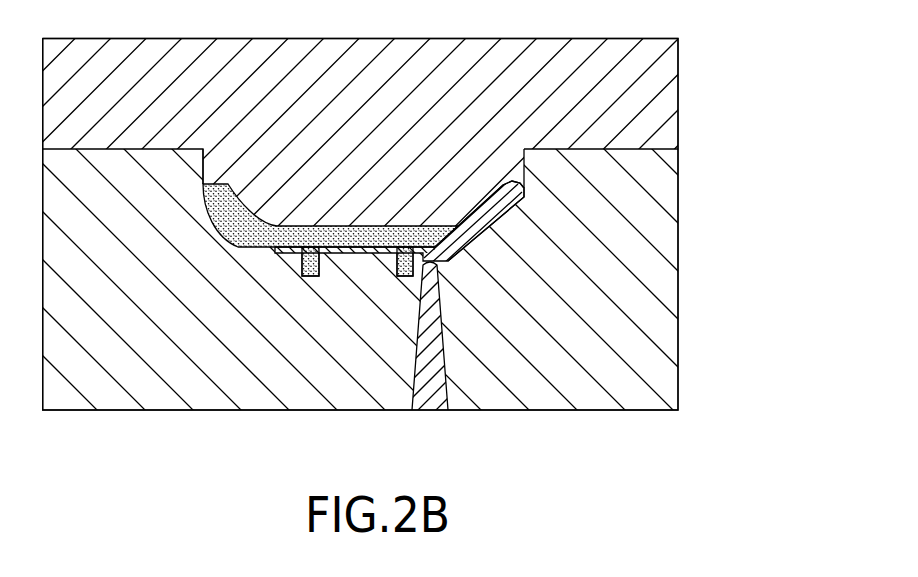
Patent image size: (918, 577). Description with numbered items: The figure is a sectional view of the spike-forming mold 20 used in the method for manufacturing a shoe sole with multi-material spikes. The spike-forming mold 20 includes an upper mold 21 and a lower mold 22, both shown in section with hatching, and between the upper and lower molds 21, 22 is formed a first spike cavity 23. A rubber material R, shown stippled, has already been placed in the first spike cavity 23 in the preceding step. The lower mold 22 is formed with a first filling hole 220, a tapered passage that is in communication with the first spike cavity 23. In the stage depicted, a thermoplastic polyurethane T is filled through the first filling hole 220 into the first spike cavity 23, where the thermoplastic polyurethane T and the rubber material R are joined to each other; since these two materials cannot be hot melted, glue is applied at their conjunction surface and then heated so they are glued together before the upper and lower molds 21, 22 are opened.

The spike-forming mold 20 is at (688, 127).
The upper mold 21 is at (602, 165).
The lower mold 22 is at (667, 370).
The first spike cavity 23 is at (457, 229).
The first filling hole 220 is at (447, 372).
The rubber material R is at (238, 210).
The thermoplastic polyurethane T is at (488, 238).